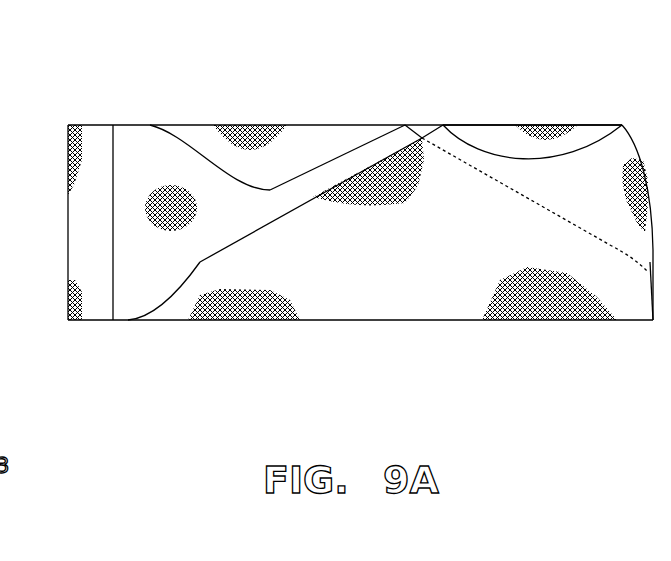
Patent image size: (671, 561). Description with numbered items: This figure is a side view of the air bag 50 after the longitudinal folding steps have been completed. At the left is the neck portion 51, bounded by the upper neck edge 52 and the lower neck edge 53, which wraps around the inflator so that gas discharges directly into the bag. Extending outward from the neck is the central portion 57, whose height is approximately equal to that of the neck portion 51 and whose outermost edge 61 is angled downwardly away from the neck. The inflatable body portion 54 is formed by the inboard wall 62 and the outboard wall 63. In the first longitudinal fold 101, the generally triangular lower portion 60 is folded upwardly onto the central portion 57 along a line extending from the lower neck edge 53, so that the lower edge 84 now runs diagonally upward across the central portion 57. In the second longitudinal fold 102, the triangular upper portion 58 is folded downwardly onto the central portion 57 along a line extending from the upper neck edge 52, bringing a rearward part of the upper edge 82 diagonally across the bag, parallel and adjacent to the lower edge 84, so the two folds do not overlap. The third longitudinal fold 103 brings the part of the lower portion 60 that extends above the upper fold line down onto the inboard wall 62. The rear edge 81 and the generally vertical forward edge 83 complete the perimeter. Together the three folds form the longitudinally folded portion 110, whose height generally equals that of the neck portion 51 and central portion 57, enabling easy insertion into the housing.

The air bag 50 is at (328, 93).
The neck portion 51 is at (114, 205).
The upper neck edge 52 is at (108, 124).
The lower neck edge 53 is at (120, 321).
The inflatable body portion 54 is at (522, 326).
The central portion 57 is at (387, 147).
The upper portion 58 is at (298, 137).
The lower portion 60 is at (437, 297).
The outermost edge 61 is at (409, 127).
The inboard wall 62 is at (421, 250).
The outboard wall 63 is at (212, 227).
The rear edge 81 is at (214, 163).
The upper edge 82 is at (420, 137).
The forward edge 83 is at (654, 263).
The lower edge 84 is at (358, 170).
The first longitudinal fold 101 is at (322, 297).
The second longitudinal fold 102 is at (260, 163).
The third longitudinal fold 103 is at (577, 138).
The longitudinally folded portion 110 is at (626, 120).